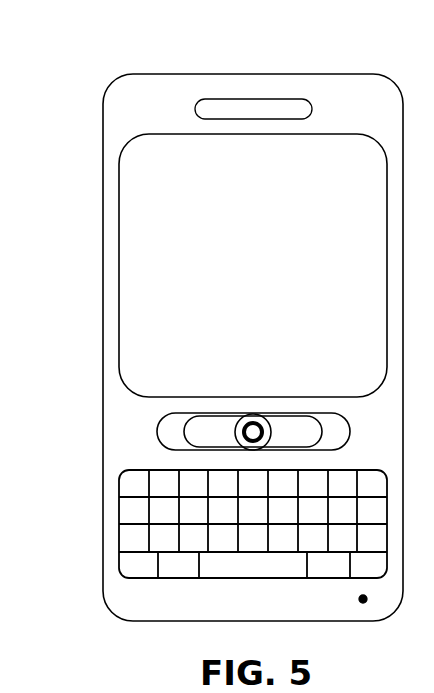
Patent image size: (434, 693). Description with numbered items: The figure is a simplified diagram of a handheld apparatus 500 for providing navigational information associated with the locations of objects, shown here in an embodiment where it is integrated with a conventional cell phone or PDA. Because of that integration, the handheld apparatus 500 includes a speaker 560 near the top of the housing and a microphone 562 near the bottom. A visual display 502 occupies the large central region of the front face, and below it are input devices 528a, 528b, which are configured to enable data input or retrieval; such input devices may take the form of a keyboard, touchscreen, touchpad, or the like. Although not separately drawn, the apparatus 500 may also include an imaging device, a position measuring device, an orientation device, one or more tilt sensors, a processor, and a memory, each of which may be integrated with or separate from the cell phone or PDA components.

The handheld apparatus 500 is at (165, 73).
The speaker 560 is at (312, 109).
The visual display 502 is at (278, 278).
The input device 528a is at (157, 433).
The input device 528b is at (119, 509).
The microphone 562 is at (360, 599).